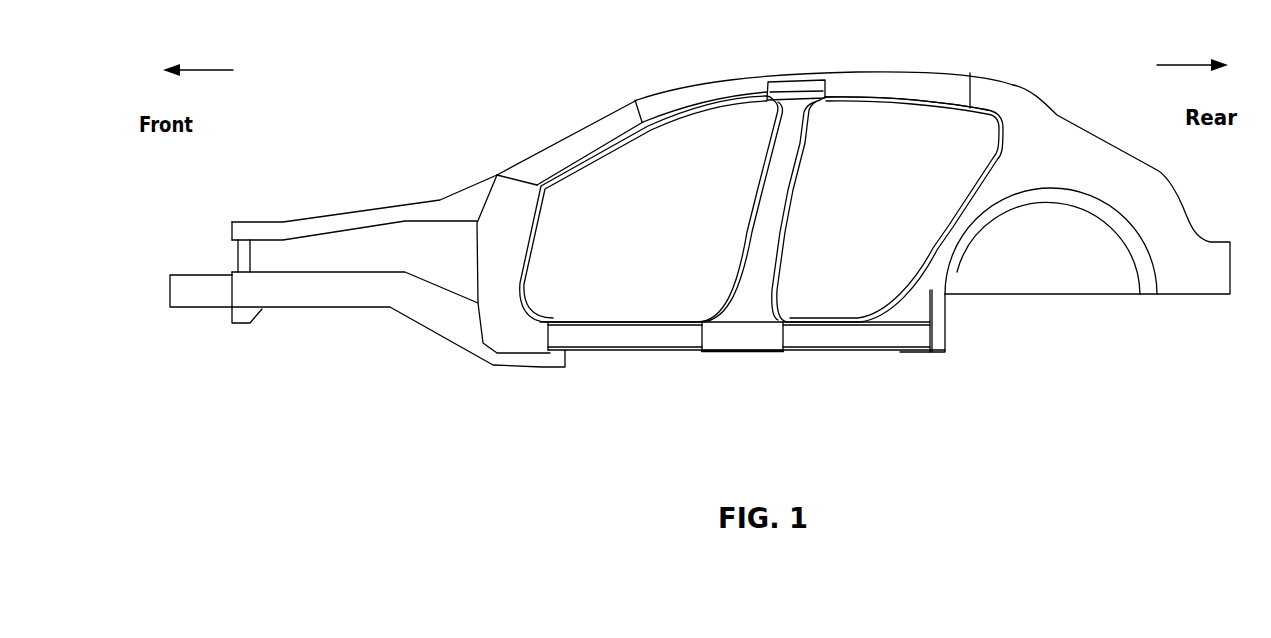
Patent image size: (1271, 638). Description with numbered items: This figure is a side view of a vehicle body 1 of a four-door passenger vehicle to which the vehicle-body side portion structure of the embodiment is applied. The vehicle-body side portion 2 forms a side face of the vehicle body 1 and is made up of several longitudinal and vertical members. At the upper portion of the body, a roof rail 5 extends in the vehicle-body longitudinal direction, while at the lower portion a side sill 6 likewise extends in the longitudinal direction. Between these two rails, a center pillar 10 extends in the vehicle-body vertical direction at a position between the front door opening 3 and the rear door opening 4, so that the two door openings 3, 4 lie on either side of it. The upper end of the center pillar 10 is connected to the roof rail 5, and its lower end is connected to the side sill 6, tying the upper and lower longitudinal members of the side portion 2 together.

The vehicle body 1 is at (459, 77).
The vehicle-body side portion 2 is at (633, 97).
The front door opening 3 is at (650, 225).
The rear door opening 4 is at (875, 225).
The roof rail 5 is at (858, 71).
The side sill 6 is at (815, 343).
The center pillar 10 is at (782, 172).